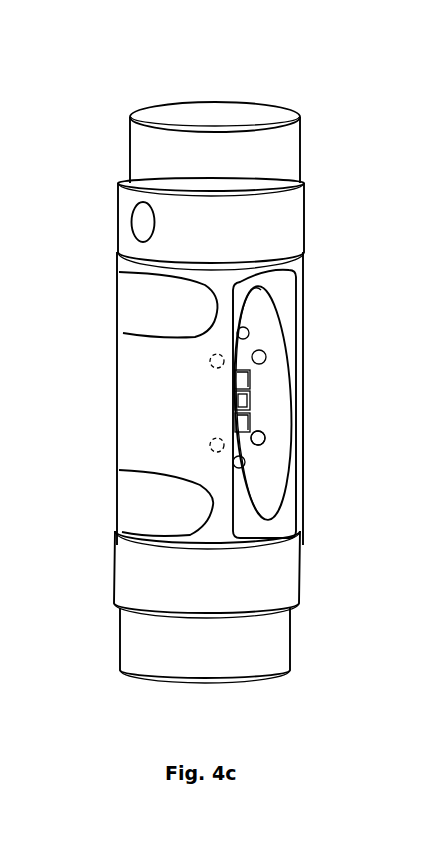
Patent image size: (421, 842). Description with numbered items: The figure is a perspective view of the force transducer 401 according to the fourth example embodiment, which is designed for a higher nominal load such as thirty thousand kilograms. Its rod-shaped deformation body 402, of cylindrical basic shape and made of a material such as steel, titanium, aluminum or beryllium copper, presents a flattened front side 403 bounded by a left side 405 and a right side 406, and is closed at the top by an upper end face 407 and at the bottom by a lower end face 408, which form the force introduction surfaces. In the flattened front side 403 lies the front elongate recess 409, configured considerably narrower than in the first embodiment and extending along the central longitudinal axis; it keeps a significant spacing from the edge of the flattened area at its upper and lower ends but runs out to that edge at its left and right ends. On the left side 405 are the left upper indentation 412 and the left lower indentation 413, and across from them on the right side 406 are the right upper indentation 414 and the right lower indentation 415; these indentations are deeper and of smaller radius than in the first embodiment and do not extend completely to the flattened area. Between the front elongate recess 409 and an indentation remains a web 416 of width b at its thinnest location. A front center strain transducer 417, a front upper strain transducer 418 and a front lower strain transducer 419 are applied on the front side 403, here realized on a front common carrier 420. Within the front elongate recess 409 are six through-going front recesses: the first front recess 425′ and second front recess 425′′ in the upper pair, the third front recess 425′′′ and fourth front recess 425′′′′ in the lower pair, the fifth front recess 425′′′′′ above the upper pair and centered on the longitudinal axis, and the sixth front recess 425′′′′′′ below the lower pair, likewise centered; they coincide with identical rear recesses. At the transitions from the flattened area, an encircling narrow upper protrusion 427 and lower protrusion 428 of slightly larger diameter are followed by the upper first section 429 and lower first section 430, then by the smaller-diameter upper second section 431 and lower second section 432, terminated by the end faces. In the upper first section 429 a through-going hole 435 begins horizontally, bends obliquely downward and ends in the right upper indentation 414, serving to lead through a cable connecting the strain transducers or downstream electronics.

The force transducer 401 is at (340, 97).
The deformation body 402 is at (282, 513).
The front side 403 is at (258, 568).
The left side 405 is at (140, 423).
The right side 406 is at (303, 441).
The upper end face 407 is at (197, 115).
The lower end face 408 is at (160, 683).
The front elongate recess 409 is at (264, 435).
The left upper indentation 412 is at (140, 307).
The left lower indentation 413 is at (143, 508).
The right upper indentation 414 is at (301, 292).
The right lower indentation 415 is at (298, 495).
The web 416 is at (234, 304).
The front center strain transducer 417 is at (251, 400).
The front upper strain transducer 418 is at (251, 378).
The front lower strain transducer 419 is at (251, 422).
The front common carrier 420 is at (207, 378).
The first front recess 425′ is at (210, 363).
The second front recess 425′′ is at (265, 355).
The third front recess 425′′′ is at (210, 447).
The fourth front recess 425′′′′ is at (266, 442).
The fifth front recess 425′′′′′ is at (238, 335).
The sixth front recess 425′′′′′′ is at (233, 463).
The upper protrusion 427 is at (304, 261).
The lower protrusion 428 is at (303, 537).
The upper first section 429 is at (292, 237).
The lower first section 430 is at (285, 600).
The upper second section 431 is at (274, 182).
The lower second section 432 is at (262, 627).
The through-going hole 435 is at (143, 224).